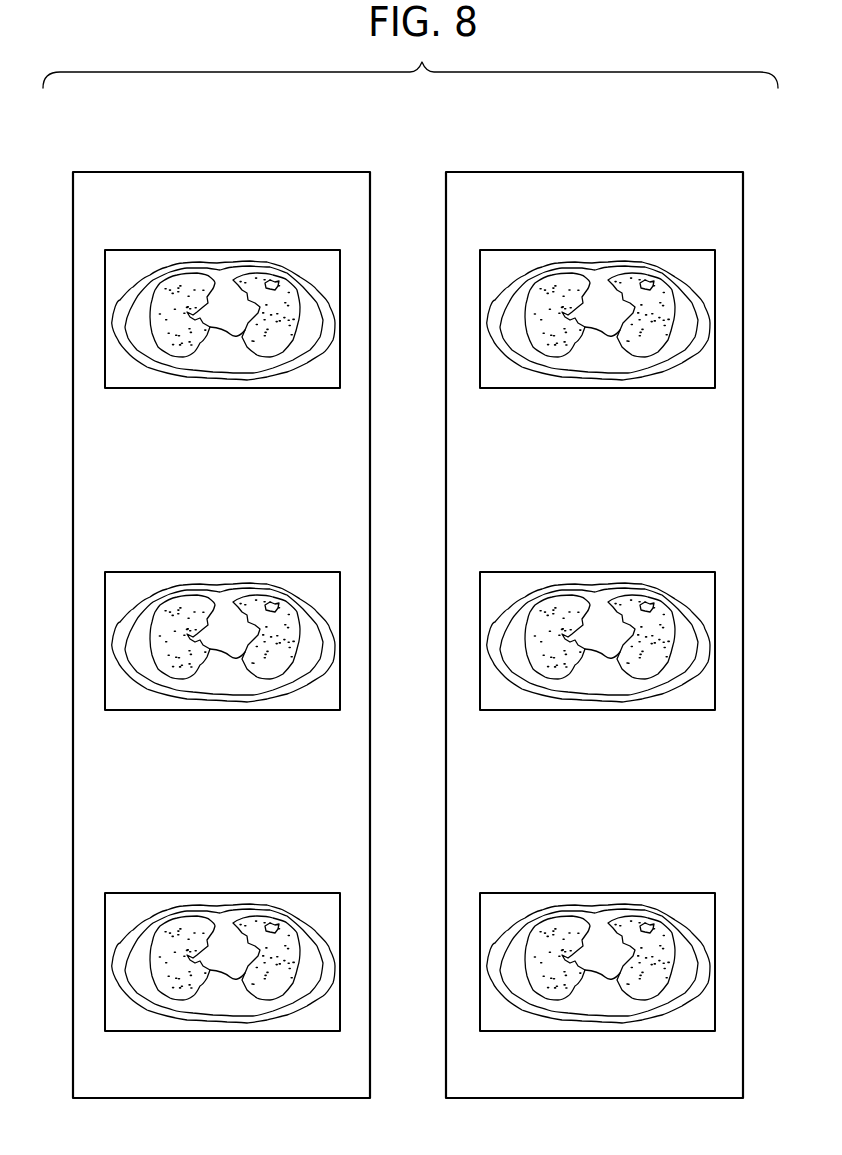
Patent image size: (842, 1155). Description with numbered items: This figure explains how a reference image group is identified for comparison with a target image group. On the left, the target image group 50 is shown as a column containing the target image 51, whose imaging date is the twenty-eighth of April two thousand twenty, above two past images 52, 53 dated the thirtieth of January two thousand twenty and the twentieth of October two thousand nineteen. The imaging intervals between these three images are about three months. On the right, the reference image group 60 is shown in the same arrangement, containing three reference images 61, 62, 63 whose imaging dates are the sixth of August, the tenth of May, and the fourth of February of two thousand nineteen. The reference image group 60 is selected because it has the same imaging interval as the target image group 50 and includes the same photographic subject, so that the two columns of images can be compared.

The target image group 50 is at (295, 172).
The target image 51 is at (295, 250).
The past image 52 is at (295, 572).
The past image 53 is at (295, 893).
The reference image group 60 is at (668, 172).
The reference image 61 is at (668, 250).
The reference image 62 is at (668, 572).
The reference image 63 is at (668, 893).